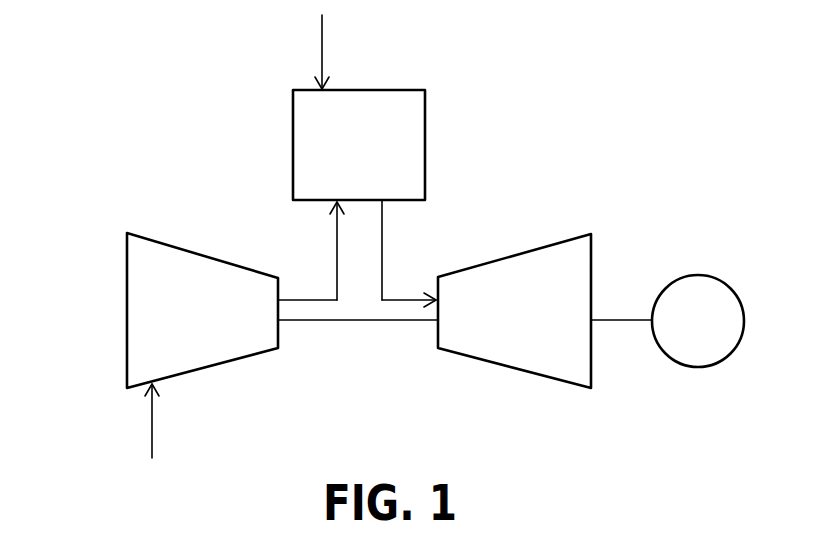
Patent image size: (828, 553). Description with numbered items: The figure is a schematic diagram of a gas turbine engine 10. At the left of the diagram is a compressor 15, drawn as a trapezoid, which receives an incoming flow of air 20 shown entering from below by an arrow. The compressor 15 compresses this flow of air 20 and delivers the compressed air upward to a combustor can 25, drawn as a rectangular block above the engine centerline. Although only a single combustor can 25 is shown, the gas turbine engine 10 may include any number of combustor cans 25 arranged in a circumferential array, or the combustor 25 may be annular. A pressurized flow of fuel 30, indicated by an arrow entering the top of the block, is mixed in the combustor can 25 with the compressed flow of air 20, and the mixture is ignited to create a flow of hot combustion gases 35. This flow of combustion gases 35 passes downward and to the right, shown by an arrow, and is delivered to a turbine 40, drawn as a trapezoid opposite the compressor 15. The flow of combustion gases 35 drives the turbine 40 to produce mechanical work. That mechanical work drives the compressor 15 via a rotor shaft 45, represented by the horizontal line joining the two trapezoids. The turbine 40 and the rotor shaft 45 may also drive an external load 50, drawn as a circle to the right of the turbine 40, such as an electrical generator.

The gas turbine engine 10 is at (185, 150).
The compressor 15 is at (202, 310).
The flow of air 20 is at (151, 425).
The combustor can 25 is at (351, 195).
The flow of fuel 30 is at (320, 37).
The flow of hot combustion gases 35 is at (397, 300).
The turbine 40 is at (514, 311).
The rotor shaft 45 is at (615, 320).
The external load 50 is at (698, 321).